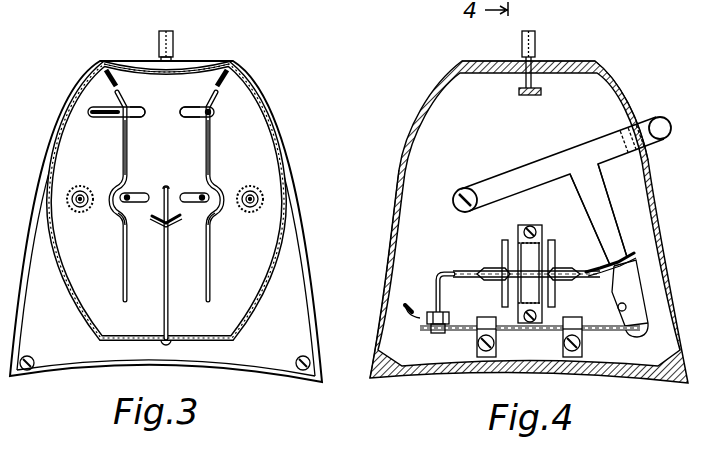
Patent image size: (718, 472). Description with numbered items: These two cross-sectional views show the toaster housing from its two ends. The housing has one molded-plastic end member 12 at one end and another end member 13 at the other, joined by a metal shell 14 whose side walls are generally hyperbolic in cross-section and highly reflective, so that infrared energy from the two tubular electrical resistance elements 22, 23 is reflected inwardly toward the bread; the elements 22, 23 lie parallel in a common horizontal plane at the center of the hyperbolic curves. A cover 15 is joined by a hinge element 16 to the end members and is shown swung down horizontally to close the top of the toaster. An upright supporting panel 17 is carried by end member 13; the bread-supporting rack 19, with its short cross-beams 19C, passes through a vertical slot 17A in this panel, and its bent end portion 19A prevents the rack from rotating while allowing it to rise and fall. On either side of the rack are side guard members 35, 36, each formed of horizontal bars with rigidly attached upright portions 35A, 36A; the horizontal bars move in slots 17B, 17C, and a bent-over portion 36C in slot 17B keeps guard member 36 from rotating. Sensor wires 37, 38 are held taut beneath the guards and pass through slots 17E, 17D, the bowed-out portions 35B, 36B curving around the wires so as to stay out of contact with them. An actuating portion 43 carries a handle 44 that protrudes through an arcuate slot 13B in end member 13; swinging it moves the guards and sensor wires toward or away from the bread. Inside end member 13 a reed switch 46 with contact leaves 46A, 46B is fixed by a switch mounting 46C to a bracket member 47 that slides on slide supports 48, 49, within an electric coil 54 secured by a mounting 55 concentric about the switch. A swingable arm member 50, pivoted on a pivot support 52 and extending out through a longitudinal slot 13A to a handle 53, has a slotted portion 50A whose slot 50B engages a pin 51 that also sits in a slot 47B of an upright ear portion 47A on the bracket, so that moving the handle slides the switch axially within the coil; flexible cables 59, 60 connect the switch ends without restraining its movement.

In FIG. 4, the end member 12 is at (391, 248).
In FIG. 3, the end member 13 is at (313, 311).
In FIG. 4, the end member 13 is at (676, 341).
In FIG. 4, the longitudinal slot 13A is at (628, 100).
In FIG. 4, the arcuate slot 13B is at (508, 62).
In FIG. 3, the metal shell 14 is at (82, 312).
In FIG. 3, the cover 15 is at (147, 72).
In FIG. 3, the hinge element 16 is at (102, 61).
In FIG. 3, the upright supporting panel 17 is at (283, 253).
In FIG. 3, the vertical slot 17A is at (167, 278).
In FIG. 3, the slot 17B is at (138, 117).
In FIG. 3, the slot 17C is at (190, 117).
In FIG. 3, the slot 17D is at (136, 193).
In FIG. 3, the slot 17E is at (197, 194).
In FIG. 3, the bread-supporting rack 19 is at (160, 223).
In FIG. 3, the bent end portion 19A is at (166, 188).
In FIG. 3, the cross-beam 19C is at (172, 225).
In FIG. 3, the tubular electrical resistance element 22 is at (250, 186).
In FIG. 3, the tubular electrical resistance element 23 is at (81, 186).
In FIG. 3, the side guard member 35 is at (211, 113).
In FIG. 3, the upright portion 35A is at (209, 160).
In FIG. 3, the bowed-out portion 35B is at (218, 214).
In FIG. 3, the side guard member 36 is at (113, 118).
In FIG. 3, the upright portion 36A is at (113, 190).
In FIG. 3, the bowed-out portion 36B is at (113, 216).
In FIG. 3, the bent-over portion 36C is at (88, 118).
In FIG. 3, the sensor wire 37 is at (208, 222).
In FIG. 3, the sensor wire 38 is at (124, 199).
In FIG. 4, the actuating portion 43 is at (542, 92).
In FIG. 3, the handle 44 is at (176, 43).
In FIG. 4, the handle 44 is at (537, 42).
In FIG. 4, the reed switch 46 is at (490, 270).
In FIG. 4, the contact leaf 46A is at (496, 270).
In FIG. 4, the contact leaf 46B is at (560, 282).
In FIG. 4, the switch mounting 46C is at (444, 306).
In FIG. 4, the bracket member 47 is at (515, 332).
In FIG. 4, the upright ear portion 47A is at (650, 300).
In FIG. 4, the slot 47B is at (646, 315).
In FIG. 4, the slide support 48 is at (478, 338).
In FIG. 4, the slide support 49 is at (583, 340).
In FIG. 4, the swingable arm member 50 is at (551, 165).
In FIG. 4, the slotted portion 50A is at (606, 235).
In FIG. 4, the slot 50B is at (632, 264).
In FIG. 4, the pin 51 is at (643, 295).
In FIG. 4, the pivot support 52 is at (461, 190).
In FIG. 4, the handle 53 is at (669, 120).
In FIG. 4, the electric coil 54 is at (554, 255).
In FIG. 4, the mounting 55 is at (536, 228).
In FIG. 4, the flexible electric cable 59 is at (624, 262).
In FIG. 4, the flexible electric cable 60 is at (404, 303).